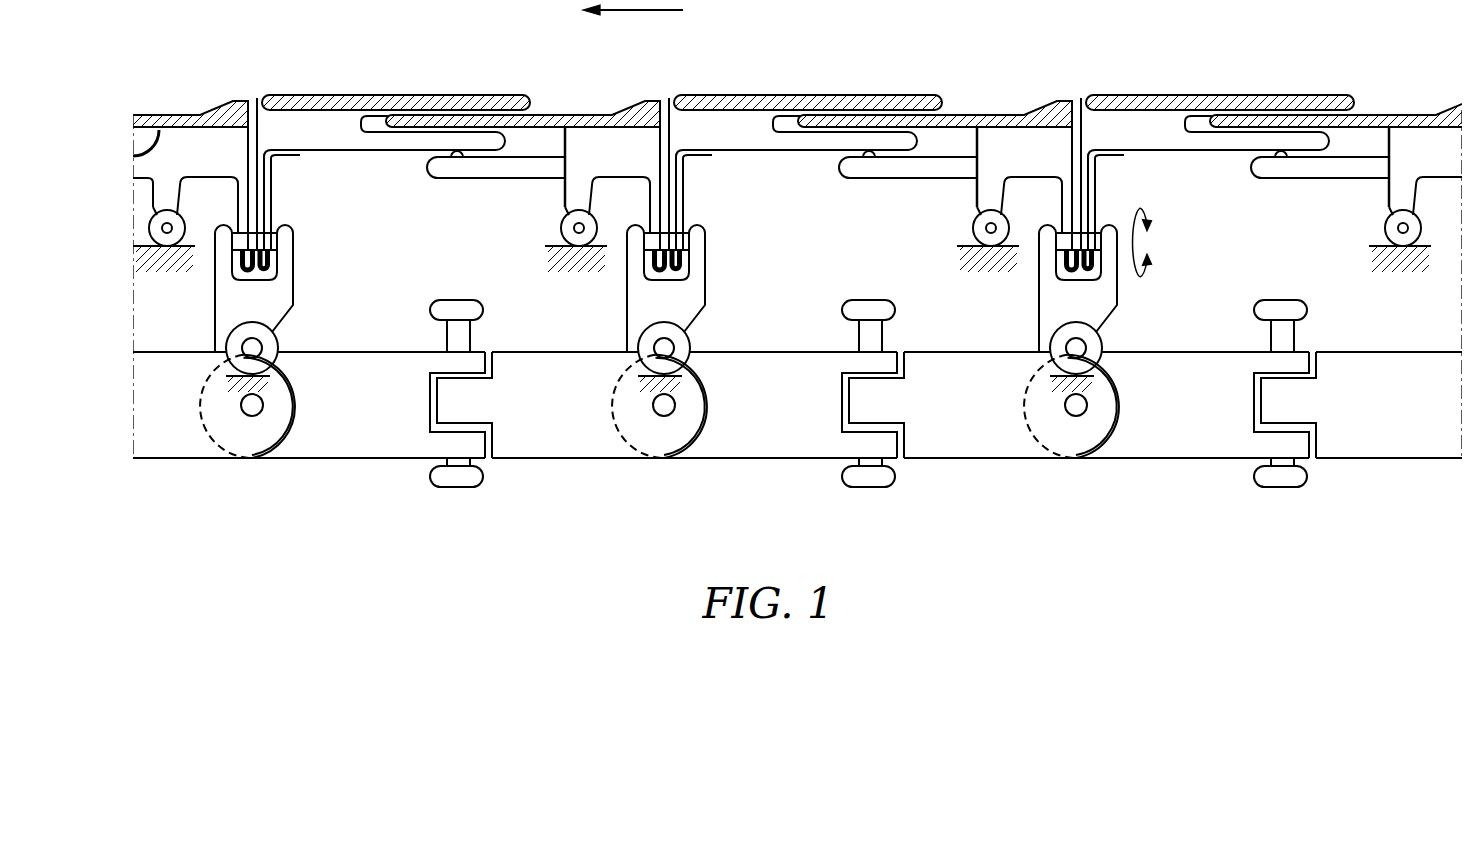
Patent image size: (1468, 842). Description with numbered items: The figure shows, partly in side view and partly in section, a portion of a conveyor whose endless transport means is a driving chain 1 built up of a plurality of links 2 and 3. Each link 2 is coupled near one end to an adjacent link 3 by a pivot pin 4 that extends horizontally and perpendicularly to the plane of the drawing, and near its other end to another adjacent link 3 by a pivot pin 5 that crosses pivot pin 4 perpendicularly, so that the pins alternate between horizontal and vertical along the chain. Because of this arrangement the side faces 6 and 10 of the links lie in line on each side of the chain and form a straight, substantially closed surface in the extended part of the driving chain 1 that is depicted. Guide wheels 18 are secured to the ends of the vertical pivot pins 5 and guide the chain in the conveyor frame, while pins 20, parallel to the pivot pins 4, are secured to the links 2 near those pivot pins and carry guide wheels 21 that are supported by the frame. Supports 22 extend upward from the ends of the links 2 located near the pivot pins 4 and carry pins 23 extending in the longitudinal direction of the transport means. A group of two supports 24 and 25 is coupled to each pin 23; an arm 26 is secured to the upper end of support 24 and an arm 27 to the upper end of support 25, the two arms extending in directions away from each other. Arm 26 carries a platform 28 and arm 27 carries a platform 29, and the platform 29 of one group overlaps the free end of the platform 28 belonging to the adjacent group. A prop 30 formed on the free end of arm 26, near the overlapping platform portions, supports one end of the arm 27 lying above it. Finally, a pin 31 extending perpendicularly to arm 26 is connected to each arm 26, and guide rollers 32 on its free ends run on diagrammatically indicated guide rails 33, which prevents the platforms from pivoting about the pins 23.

The driving chain 1 is at (297, 488).
The link 2 is at (572, 447).
The link 3 is at (366, 445).
The pivot pin 4 is at (663, 415).
The pivot pin 5 is at (470, 330).
The side face 6 is at (556, 407).
The side face 10 is at (364, 407).
The guide wheel 18 is at (448, 307).
The pin 20 is at (252, 345).
The guide wheel 21 is at (279, 343).
The support 22 is at (295, 274).
The pin 23 is at (279, 242).
The support 24 is at (647, 197).
The support 25 is at (275, 190).
The arm 26 is at (446, 170).
The arm 27 is at (331, 118).
The platform 28 is at (563, 114).
The platform 29 is at (437, 95).
The prop 30 is at (450, 153).
The pin 31 is at (574, 224).
The guide roller 32 is at (560, 232).
The guide rail 33 is at (970, 233).